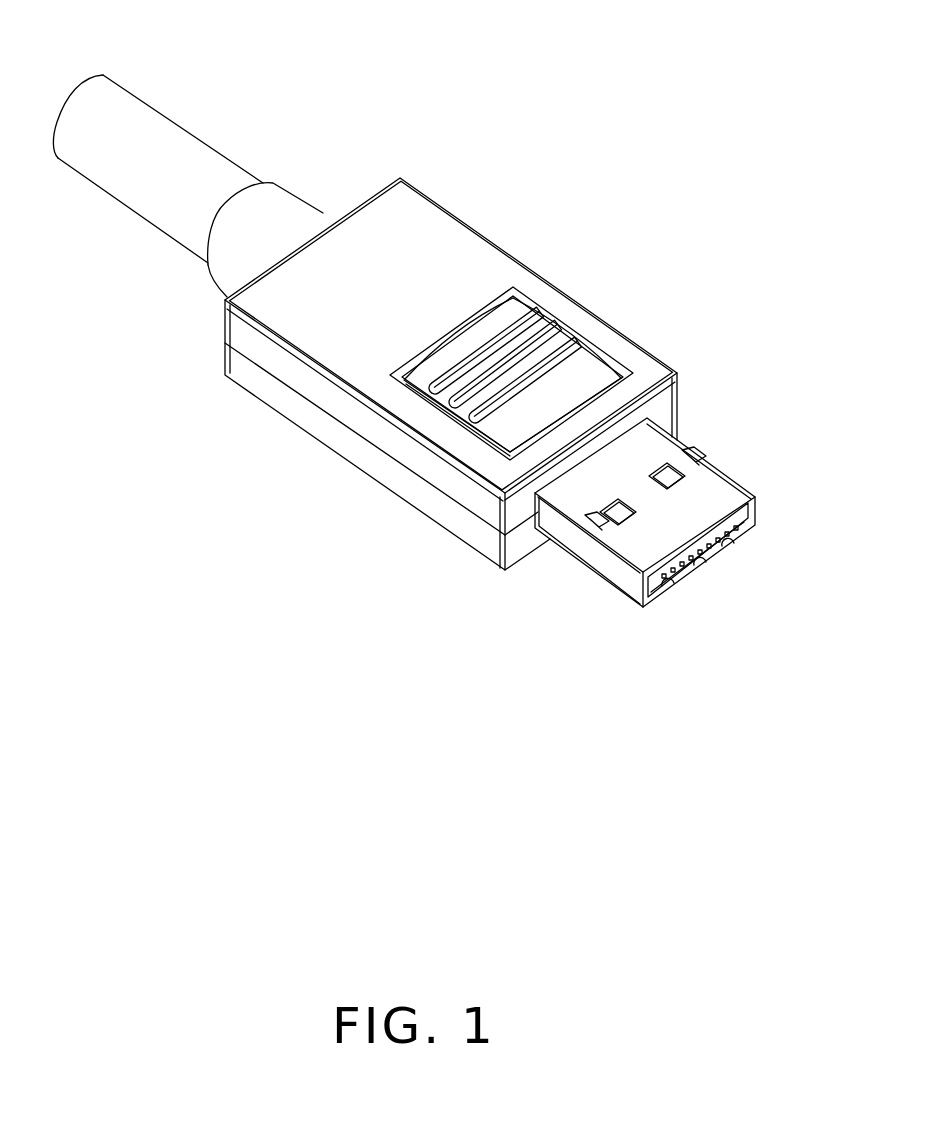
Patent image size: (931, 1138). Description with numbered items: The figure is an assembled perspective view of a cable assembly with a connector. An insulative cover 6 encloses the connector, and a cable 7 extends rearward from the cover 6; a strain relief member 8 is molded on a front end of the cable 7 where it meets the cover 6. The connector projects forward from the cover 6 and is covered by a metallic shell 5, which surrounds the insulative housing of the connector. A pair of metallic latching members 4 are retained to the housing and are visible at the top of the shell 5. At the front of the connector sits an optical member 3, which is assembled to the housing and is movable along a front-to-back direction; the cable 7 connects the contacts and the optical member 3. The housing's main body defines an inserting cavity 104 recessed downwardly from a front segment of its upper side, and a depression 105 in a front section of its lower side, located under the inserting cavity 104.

The optical member 3 is at (688, 580).
The metallic latching members 4 is at (688, 448).
The metallic shell 5 is at (707, 493).
The insulative cover 6 is at (412, 253).
The cable 7 is at (165, 155).
The strain relief member 8 is at (273, 223).
The inserting cavity 104 is at (660, 567).
The depression 105 is at (722, 560).